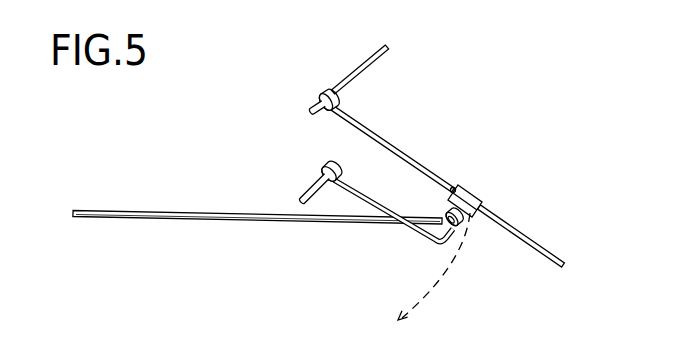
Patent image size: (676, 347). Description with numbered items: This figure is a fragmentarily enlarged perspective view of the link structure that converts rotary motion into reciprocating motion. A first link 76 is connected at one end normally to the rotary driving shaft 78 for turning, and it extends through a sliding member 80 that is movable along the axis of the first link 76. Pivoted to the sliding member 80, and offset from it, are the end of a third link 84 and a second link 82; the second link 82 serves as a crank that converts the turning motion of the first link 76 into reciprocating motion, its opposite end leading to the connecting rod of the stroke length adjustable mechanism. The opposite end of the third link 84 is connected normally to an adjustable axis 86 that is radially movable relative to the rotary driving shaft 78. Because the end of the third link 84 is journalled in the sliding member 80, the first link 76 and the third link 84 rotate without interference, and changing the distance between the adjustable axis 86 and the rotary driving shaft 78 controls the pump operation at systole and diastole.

The first link 76 is at (357, 125).
The rotary driving shaft 78 is at (360, 67).
The sliding member 80 is at (486, 199).
The second link 82 is at (200, 219).
The third link 84 is at (426, 240).
The adjustable axis 86 is at (311, 188).